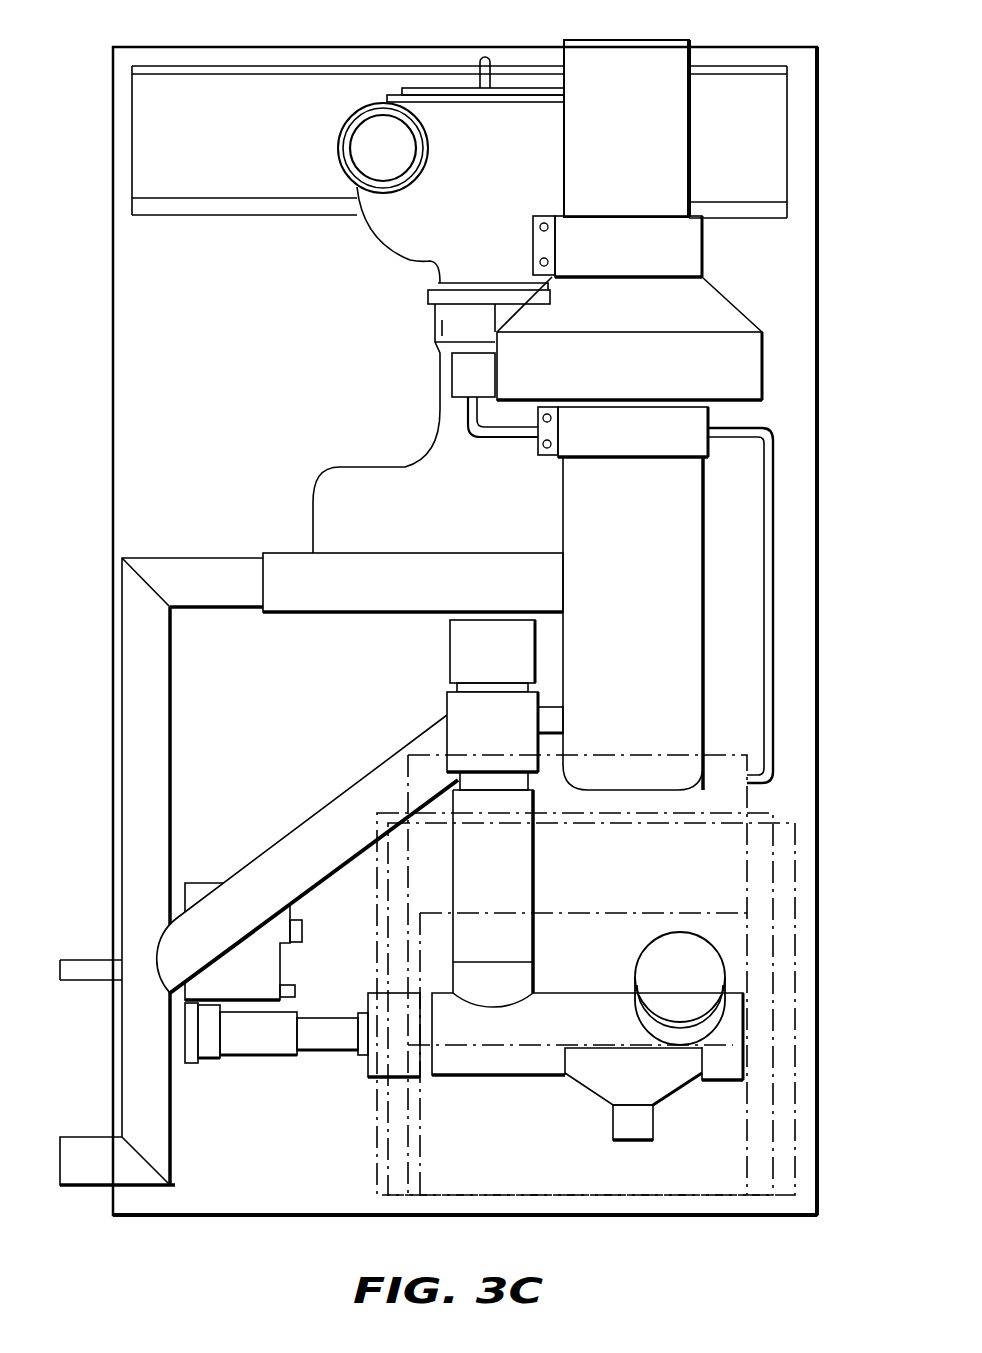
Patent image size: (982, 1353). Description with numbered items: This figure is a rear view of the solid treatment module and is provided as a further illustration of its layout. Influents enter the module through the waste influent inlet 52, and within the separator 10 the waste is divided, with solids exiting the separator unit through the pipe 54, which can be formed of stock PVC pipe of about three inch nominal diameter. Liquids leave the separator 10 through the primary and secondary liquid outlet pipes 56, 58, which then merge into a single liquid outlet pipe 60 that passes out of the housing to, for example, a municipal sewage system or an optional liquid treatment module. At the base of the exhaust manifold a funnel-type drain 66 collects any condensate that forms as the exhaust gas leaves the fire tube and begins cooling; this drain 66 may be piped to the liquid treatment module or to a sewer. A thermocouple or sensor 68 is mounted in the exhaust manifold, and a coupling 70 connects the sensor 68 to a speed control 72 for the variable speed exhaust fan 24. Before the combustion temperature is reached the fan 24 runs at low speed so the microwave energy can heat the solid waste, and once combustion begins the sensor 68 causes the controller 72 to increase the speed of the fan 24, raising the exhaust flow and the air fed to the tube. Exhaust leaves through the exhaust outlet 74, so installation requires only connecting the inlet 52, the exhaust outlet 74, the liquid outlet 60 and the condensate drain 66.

The separator 10 is at (346, 320).
The exhaust fan 24 is at (762, 360).
The inlet 52 is at (352, 148).
The pipe 54 is at (522, 868).
The primary liquid outlet pipe 56 is at (170, 671).
The secondary liquid outlet pipe 58 is at (318, 822).
The liquid outlet pipe 60 is at (165, 1126).
The funnel-type drain 66 is at (653, 1088).
The thermocouple 68 is at (778, 800).
The coupling 70 is at (773, 568).
The speed control 72 is at (452, 378).
The exhaust outlet 74 is at (673, 47).